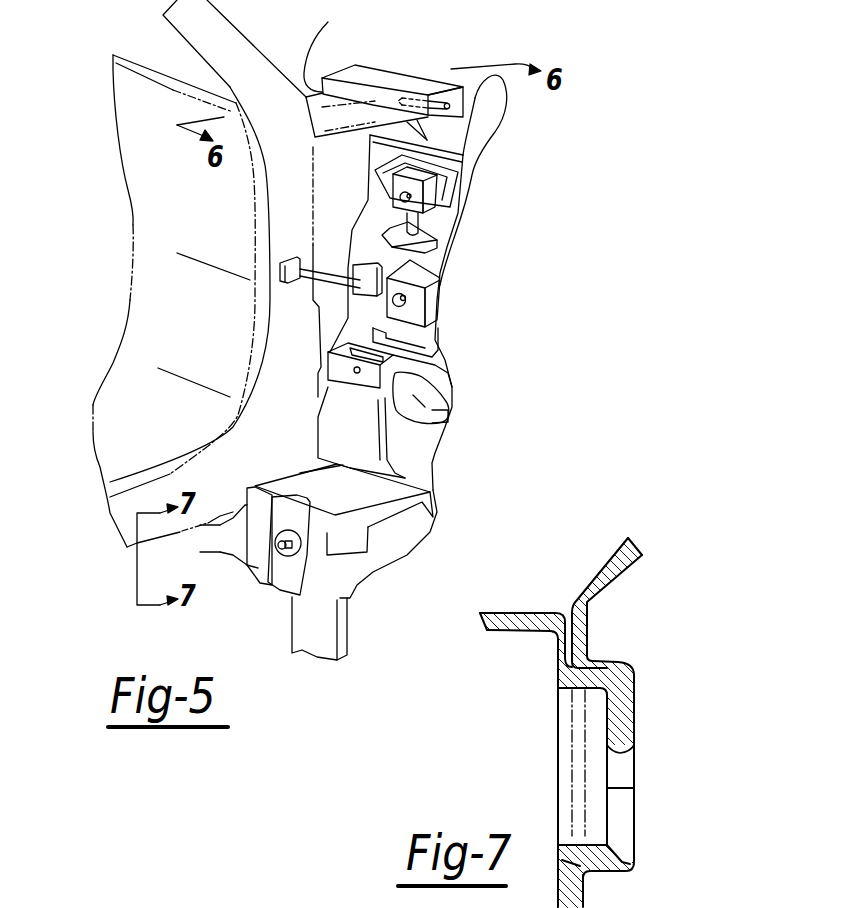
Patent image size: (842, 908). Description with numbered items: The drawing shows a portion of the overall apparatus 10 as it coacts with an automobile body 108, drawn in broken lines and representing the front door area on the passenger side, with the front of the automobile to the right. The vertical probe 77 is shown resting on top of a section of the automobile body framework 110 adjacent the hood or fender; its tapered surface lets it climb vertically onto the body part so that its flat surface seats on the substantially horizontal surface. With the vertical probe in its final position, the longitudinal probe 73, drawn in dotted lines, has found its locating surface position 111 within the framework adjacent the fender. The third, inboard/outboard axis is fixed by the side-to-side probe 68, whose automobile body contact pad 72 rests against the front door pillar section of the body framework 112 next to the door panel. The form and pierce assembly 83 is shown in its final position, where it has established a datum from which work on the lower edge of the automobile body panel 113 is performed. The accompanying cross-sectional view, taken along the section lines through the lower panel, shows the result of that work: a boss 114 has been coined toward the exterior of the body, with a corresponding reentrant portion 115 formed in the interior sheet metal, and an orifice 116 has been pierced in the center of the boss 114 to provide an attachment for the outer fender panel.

In FIG. 5, the apparatus 10 is at (467, 260).
In FIG. 5, the probe 68 is at (323, 272).
In FIG. 5, the automobile body contact pad 72 is at (287, 282).
In FIG. 5, the longitudinal probe 73 is at (418, 98).
In FIG. 5, the vertical probe 77 is at (386, 72).
In FIG. 5, the form and pierce assembly 83 is at (455, 535).
In FIG. 5, the automobile body 108 is at (120, 189).
In FIG. 5, the automobile body framework 110 is at (366, 73).
In FIG. 5, the surface position 111 is at (477, 102).
In FIG. 5, the front door pillar section of the body framework 112 is at (290, 219).
In FIG. 5, the automobile body panel 113 is at (284, 437).
In FIG. 7, the boss 114 is at (637, 819).
In FIG. 7, the reentrant portion 115 is at (607, 720).
In FIG. 7, the orifice 116 is at (636, 746).